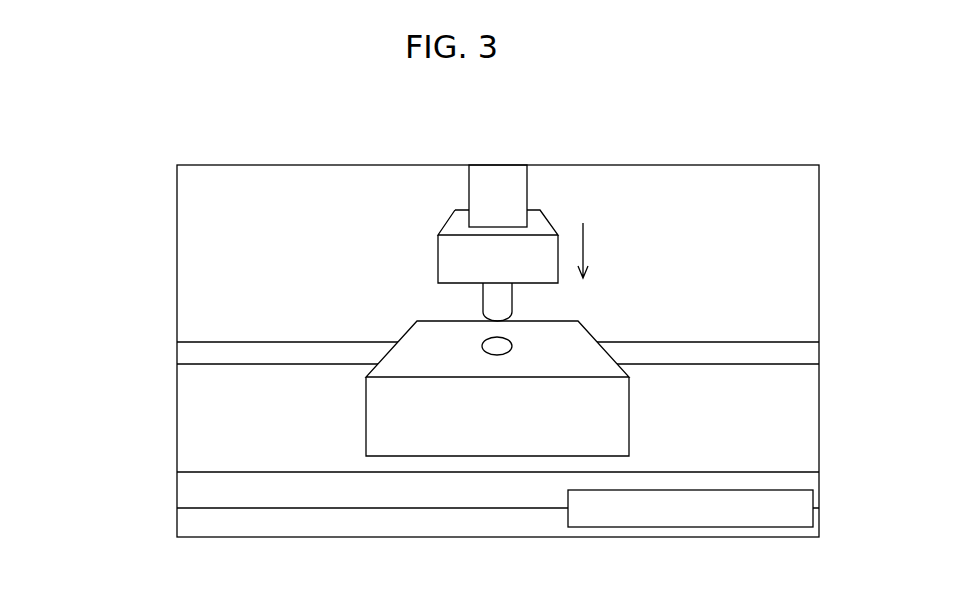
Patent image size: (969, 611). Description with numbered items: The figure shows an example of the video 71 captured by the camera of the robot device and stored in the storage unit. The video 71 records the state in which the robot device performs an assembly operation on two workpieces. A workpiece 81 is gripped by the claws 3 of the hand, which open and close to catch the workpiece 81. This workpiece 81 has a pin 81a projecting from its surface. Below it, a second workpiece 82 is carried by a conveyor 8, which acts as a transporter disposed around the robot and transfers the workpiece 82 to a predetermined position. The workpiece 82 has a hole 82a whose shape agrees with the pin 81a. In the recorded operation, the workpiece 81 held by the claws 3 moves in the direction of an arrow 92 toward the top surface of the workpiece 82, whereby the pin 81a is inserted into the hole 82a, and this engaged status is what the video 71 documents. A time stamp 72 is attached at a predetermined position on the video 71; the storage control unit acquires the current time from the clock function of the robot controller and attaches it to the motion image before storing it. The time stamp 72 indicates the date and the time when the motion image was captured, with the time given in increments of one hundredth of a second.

The claws 3 is at (502, 197).
The video 71 is at (740, 164).
The time stamp 72 is at (758, 528).
The conveyor 8 is at (809, 418).
The workpiece 81 is at (459, 255).
The pin 81a is at (495, 303).
The workpiece 82 is at (381, 424).
The hole 82a is at (496, 344).
The arrow 92 is at (584, 242).